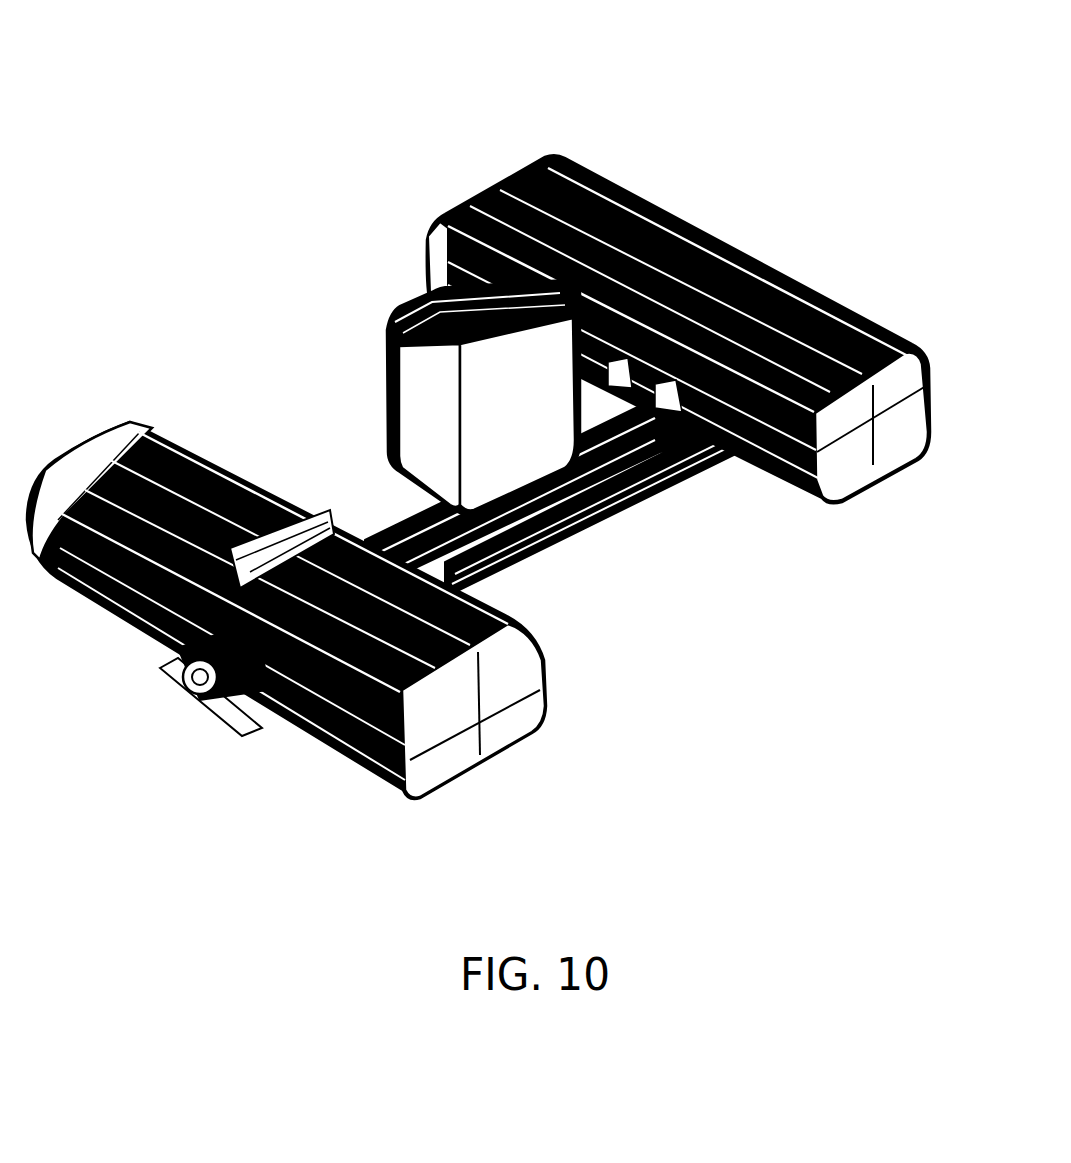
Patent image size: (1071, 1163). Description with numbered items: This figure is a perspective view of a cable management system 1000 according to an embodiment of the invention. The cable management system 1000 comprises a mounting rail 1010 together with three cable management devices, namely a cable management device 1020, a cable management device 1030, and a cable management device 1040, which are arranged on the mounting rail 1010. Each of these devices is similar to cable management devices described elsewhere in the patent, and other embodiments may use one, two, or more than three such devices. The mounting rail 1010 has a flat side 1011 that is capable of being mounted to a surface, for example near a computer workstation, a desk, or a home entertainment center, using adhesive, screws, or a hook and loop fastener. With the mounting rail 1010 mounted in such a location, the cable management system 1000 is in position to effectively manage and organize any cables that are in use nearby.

The cable management system 1000 is at (264, 102).
The mounting rail 1010 is at (181, 688).
The flat side 1011 is at (582, 534).
The cable management device 1020 is at (612, 203).
The cable management device 1030 is at (428, 317).
The cable management device 1040 is at (540, 696).